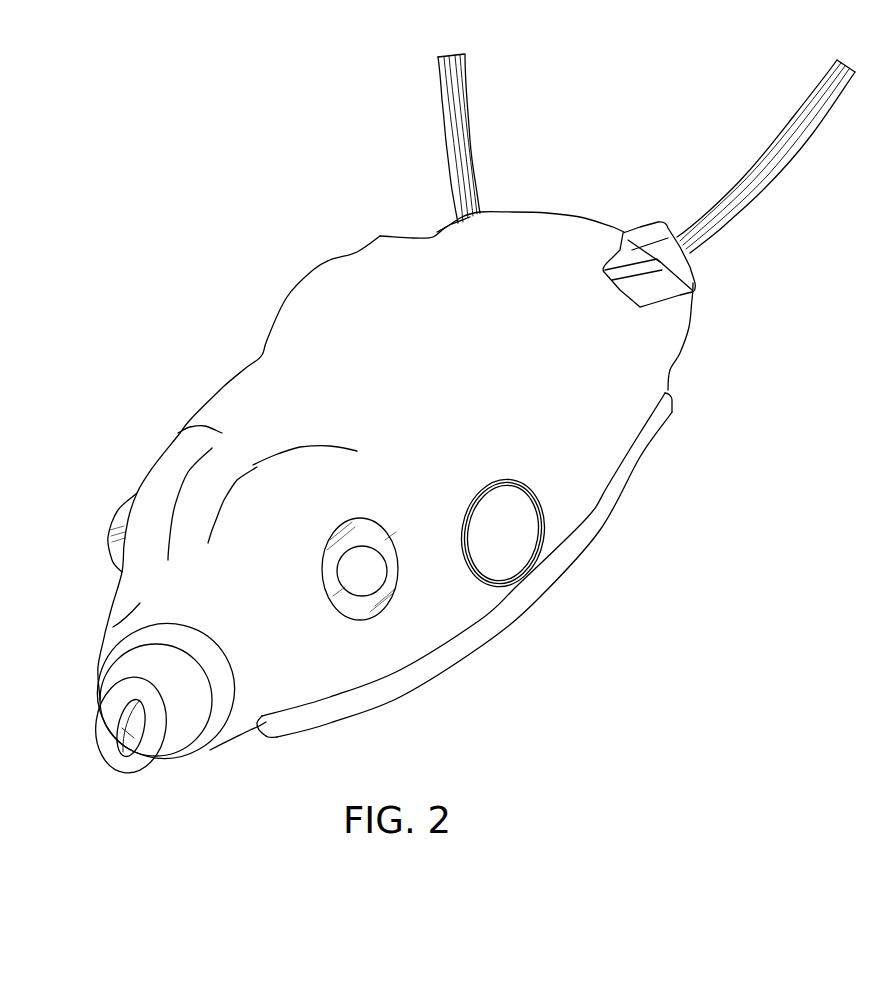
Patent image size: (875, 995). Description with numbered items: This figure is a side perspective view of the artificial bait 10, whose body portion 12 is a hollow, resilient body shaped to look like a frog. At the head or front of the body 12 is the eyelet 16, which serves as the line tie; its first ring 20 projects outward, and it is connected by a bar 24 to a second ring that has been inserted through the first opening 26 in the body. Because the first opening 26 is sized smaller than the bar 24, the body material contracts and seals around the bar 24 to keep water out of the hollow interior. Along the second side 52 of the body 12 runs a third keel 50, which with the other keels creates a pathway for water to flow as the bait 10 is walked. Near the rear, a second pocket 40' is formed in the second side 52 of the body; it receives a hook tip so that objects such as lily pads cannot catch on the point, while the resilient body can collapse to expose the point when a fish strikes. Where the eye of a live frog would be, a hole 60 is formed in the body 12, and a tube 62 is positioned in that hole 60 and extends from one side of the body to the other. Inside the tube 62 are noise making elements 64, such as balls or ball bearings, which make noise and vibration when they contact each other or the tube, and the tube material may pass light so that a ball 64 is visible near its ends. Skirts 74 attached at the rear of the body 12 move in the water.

The artificial bait 10 is at (582, 169).
The body portion 12 is at (243, 387).
The eyelet 16 is at (130, 775).
The first ring 20 is at (110, 725).
The bar 24 is at (162, 700).
The first opening 26 is at (172, 701).
The second pocket 40' is at (673, 264).
The third keel 50 is at (475, 645).
The second side 52 is at (560, 590).
The hole 60 is at (379, 607).
The tube 62 is at (113, 527).
The noise making element 64 is at (355, 583).
The skirt 74 is at (457, 110).